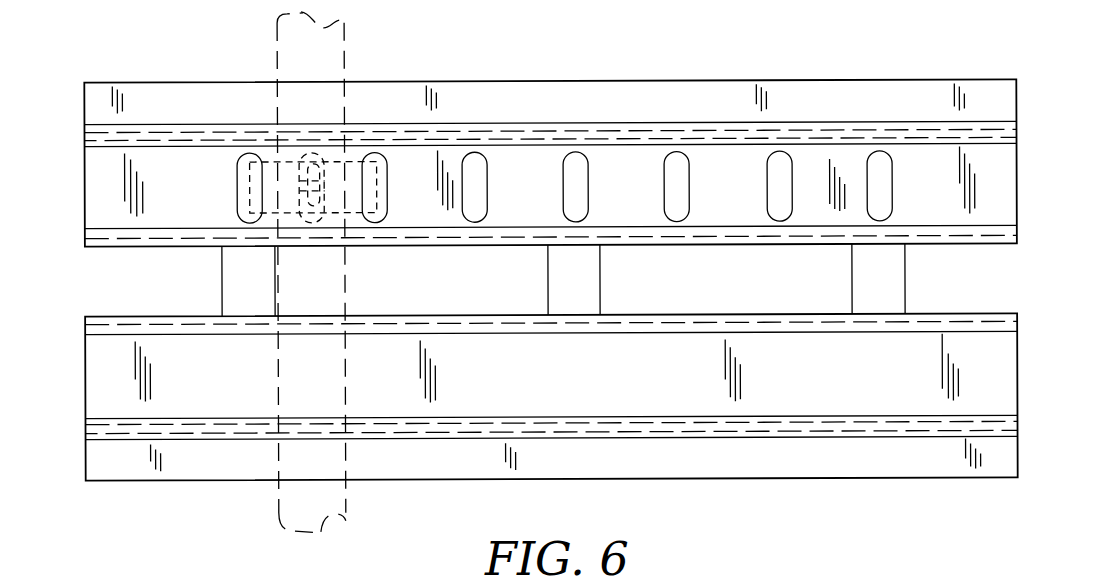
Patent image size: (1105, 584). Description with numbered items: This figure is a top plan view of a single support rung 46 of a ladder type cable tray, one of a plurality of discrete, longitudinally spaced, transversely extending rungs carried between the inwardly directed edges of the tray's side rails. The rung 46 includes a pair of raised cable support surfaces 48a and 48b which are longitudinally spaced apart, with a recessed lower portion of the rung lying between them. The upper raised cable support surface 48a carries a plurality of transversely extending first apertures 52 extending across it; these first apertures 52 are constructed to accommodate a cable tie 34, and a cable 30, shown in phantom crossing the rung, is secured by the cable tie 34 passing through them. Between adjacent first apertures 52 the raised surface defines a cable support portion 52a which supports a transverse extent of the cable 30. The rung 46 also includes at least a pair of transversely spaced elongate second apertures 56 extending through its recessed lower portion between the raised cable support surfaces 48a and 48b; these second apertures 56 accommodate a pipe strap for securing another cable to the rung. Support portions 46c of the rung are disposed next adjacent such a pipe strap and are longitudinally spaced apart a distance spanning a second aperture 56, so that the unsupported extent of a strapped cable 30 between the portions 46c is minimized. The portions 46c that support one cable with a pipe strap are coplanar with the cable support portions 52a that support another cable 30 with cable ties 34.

The cable 30 is at (323, 50).
The cable tie 34 is at (288, 190).
The support rung 46 is at (585, 295).
The support portions 46c is at (510, 347).
The raised cable support surface 48a is at (975, 182).
The raised cable support surface 48b is at (970, 368).
The first apertures 52 is at (250, 152).
The cable support portion 52a is at (350, 153).
The second apertures 56 is at (815, 279).